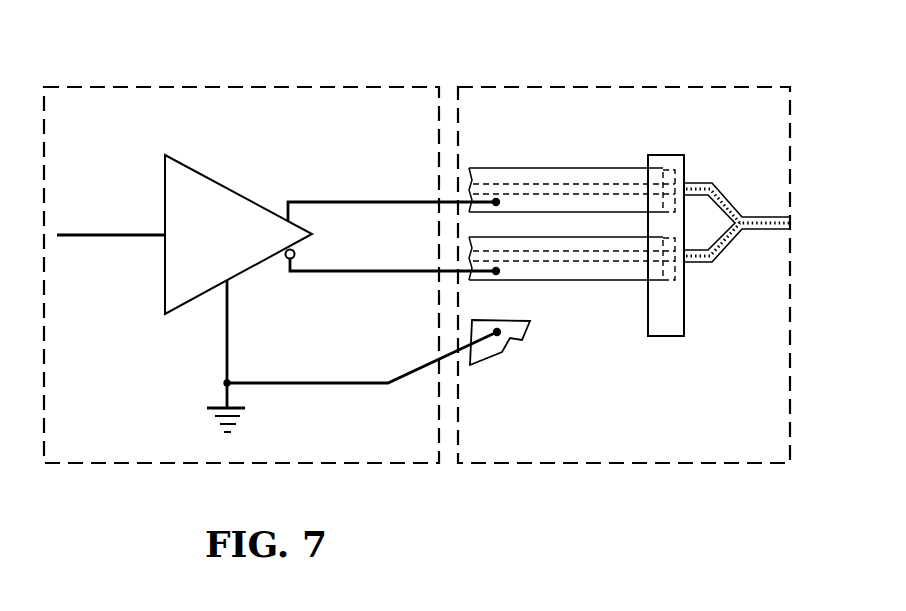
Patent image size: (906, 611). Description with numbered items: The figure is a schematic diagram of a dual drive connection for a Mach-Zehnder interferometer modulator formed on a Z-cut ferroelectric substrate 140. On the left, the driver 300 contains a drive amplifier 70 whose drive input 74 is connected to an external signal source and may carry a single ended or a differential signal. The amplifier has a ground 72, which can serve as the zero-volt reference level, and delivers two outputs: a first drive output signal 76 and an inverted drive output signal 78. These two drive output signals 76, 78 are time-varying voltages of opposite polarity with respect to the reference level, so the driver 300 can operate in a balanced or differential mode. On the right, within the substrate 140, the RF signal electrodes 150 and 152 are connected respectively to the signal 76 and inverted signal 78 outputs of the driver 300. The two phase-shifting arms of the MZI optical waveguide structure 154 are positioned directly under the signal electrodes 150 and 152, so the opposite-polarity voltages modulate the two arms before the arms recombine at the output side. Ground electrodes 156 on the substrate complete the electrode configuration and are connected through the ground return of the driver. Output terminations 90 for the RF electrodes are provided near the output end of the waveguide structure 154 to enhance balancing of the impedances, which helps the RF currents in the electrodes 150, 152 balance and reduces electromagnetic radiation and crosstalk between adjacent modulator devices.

The driver 300 is at (317, 103).
The Z-cut ferroelectric substrate 140 is at (707, 107).
The drive amplifier 70 is at (220, 195).
The drive input 74 is at (82, 237).
The first drive output signal 76 is at (321, 207).
The inverted drive output signal 78 is at (321, 262).
The ground 72 is at (230, 352).
The RF signal electrode 150 is at (585, 180).
The RF signal electrode 152 is at (583, 272).
The output terminations 90 is at (684, 162).
The MZI optical waveguide structure 154 is at (710, 263).
The ground electrodes 156 is at (520, 345).